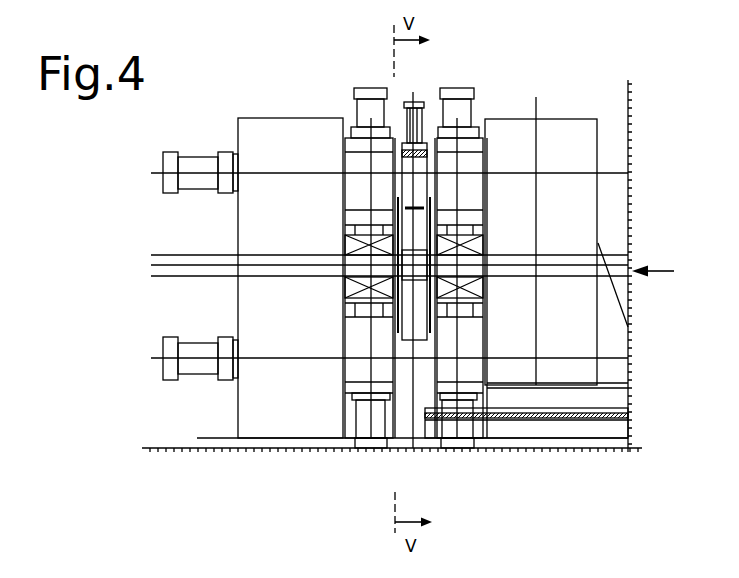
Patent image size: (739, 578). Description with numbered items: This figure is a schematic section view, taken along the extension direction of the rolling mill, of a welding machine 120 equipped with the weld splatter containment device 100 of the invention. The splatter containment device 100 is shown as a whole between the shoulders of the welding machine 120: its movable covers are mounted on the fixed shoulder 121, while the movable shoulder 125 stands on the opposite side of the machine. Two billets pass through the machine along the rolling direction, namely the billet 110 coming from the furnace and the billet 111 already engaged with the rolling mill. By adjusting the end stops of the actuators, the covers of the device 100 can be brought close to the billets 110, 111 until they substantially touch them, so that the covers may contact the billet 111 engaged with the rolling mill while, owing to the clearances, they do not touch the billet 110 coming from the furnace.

The splatter containment device 100 is at (397, 92).
The billet coming from the furnace 110 is at (615, 262).
The billet engaged with the rolling mill 111 is at (168, 272).
The welding machine 120 is at (503, 106).
The fixed shoulder 121 is at (357, 172).
The movable shoulder 125 is at (472, 163).